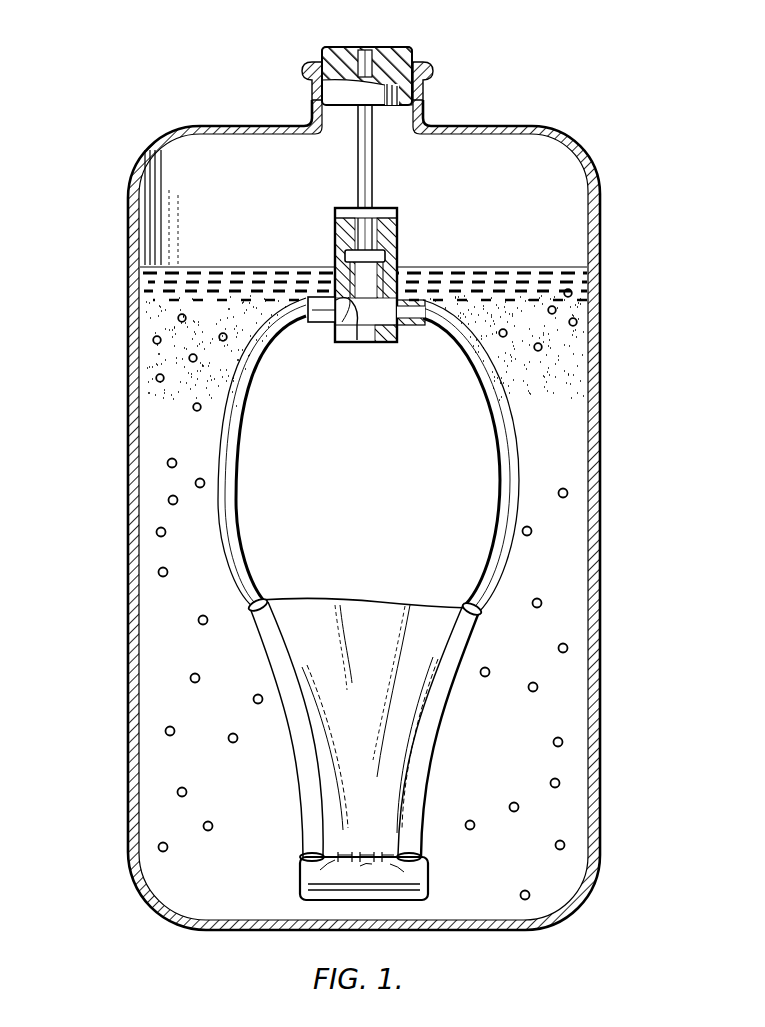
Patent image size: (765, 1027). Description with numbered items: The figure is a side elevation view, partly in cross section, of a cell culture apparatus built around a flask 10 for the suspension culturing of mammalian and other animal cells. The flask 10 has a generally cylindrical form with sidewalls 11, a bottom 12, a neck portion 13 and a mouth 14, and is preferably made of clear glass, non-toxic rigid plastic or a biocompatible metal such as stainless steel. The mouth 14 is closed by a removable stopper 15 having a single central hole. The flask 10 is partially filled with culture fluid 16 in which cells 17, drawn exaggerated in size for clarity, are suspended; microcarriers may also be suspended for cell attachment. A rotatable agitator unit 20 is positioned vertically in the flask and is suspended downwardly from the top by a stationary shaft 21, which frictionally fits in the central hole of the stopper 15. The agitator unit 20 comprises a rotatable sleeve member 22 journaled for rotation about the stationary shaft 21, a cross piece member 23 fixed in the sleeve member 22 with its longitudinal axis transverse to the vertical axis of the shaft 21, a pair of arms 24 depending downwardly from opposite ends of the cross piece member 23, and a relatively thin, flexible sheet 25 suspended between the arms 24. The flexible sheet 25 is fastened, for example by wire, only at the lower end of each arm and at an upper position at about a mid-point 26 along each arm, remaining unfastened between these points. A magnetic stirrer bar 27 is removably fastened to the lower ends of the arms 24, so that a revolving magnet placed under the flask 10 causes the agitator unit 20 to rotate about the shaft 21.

The flask 10 is at (347, 517).
The sidewalls 11 is at (601, 340).
The bottom 12 is at (250, 932).
The neck portion 13 is at (433, 98).
The mouth 14 is at (381, 56).
The removable stopper 15 is at (352, 46).
The culture fluid 16 is at (250, 302).
The cells 17 is at (195, 482).
The rotatable agitator unit 20 is at (548, 518).
The stationary shaft 21 is at (356, 175).
The rotatable sleeve member 22 is at (365, 272).
The cross piece member 23 is at (322, 298).
The arms 24 is at (253, 370).
The flexible sheet 25 is at (385, 600).
The mid-point 26 is at (263, 600).
The magnetic stirrer bar 27 is at (312, 885).